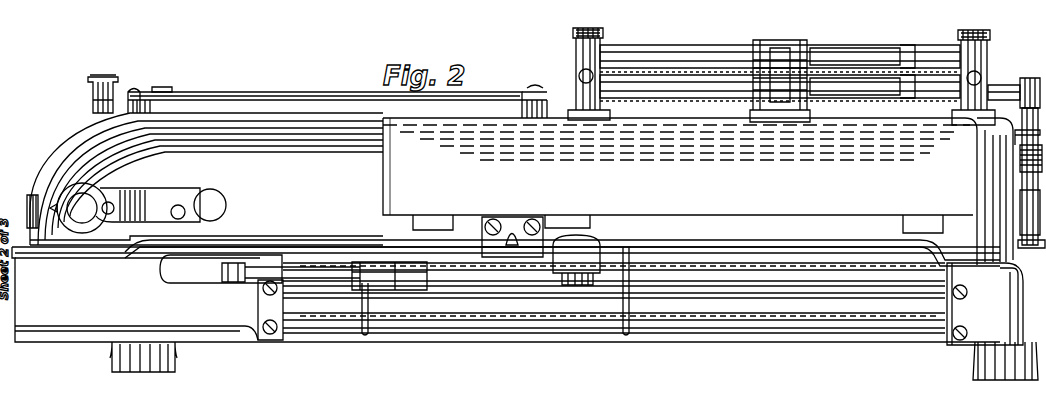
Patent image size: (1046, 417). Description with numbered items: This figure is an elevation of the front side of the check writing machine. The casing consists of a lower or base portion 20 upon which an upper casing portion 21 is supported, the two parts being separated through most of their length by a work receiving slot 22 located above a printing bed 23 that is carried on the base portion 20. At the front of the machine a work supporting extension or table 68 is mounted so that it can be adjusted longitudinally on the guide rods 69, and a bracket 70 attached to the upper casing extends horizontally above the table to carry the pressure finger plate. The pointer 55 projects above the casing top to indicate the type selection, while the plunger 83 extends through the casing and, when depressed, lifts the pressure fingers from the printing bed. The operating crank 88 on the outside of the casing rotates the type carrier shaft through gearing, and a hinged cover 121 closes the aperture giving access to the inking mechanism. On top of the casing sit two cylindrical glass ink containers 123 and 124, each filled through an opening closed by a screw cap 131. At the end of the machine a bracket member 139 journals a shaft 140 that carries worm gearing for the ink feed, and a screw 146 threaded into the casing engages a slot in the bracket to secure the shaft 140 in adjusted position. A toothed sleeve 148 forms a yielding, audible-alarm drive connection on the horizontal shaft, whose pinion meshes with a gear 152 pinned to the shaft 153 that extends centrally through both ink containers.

The base portion of casing 20 is at (525, 313).
The upper casing portion 21 is at (287, 165).
The work receiving slot 22 is at (300, 252).
The printing bed 23 is at (192, 258).
The pointer 55 is at (163, 86).
The work supporting extension or table 68 is at (397, 260).
The guide rods 69 is at (693, 282).
The bracket 70 is at (545, 222).
The plunger 83 is at (97, 76).
The operating crank 88 is at (210, 200).
The cover 121 is at (698, 191).
The ink fountain or container 123 is at (672, 58).
The ink fountain or container 124 is at (862, 63).
The screw cap 131 is at (584, 28).
The bracket member 139 is at (1017, 132).
The shaft 140 is at (1033, 70).
The screw 146 is at (1027, 172).
The sleeve 148 is at (1000, 84).
The gear 152 is at (782, 48).
The shaft 153 is at (702, 72).